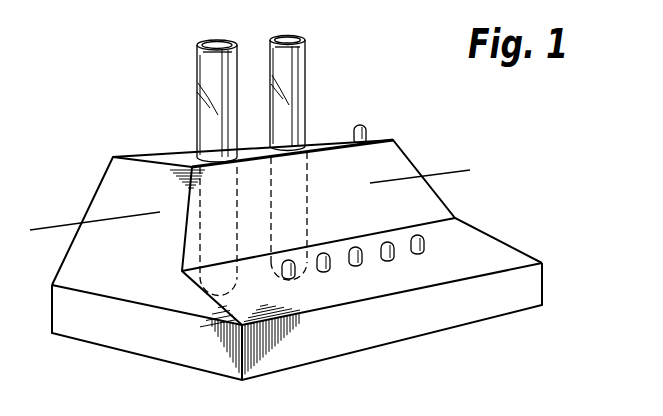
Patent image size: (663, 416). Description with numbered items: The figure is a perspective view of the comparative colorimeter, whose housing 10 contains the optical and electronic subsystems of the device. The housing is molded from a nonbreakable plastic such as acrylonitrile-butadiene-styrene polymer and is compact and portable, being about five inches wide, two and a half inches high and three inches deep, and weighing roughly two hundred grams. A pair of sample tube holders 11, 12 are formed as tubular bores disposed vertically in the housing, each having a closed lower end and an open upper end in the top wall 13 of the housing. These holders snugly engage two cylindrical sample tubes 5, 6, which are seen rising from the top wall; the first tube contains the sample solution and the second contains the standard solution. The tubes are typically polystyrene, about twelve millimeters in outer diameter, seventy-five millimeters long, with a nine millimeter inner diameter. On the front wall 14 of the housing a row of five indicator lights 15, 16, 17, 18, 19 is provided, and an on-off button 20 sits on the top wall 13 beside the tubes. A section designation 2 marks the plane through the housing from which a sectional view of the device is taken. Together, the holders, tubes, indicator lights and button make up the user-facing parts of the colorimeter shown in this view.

The section line 2- 2 is at (49, 210).
The sample tube 5 is at (197, 86).
The sample tube 6 is at (304, 66).
The housing 10 is at (456, 208).
The sample tube holder 11 is at (194, 158).
The sample tube holder 12 is at (312, 138).
The top wall 13 is at (335, 137).
The front wall 14 is at (499, 248).
The indicator light 15 is at (293, 274).
The indicator light 16 is at (331, 267).
The indicator light 17 is at (363, 260).
The indicator light 18 is at (394, 254).
The indicator light 19 is at (424, 247).
The on-off button 20 is at (366, 125).